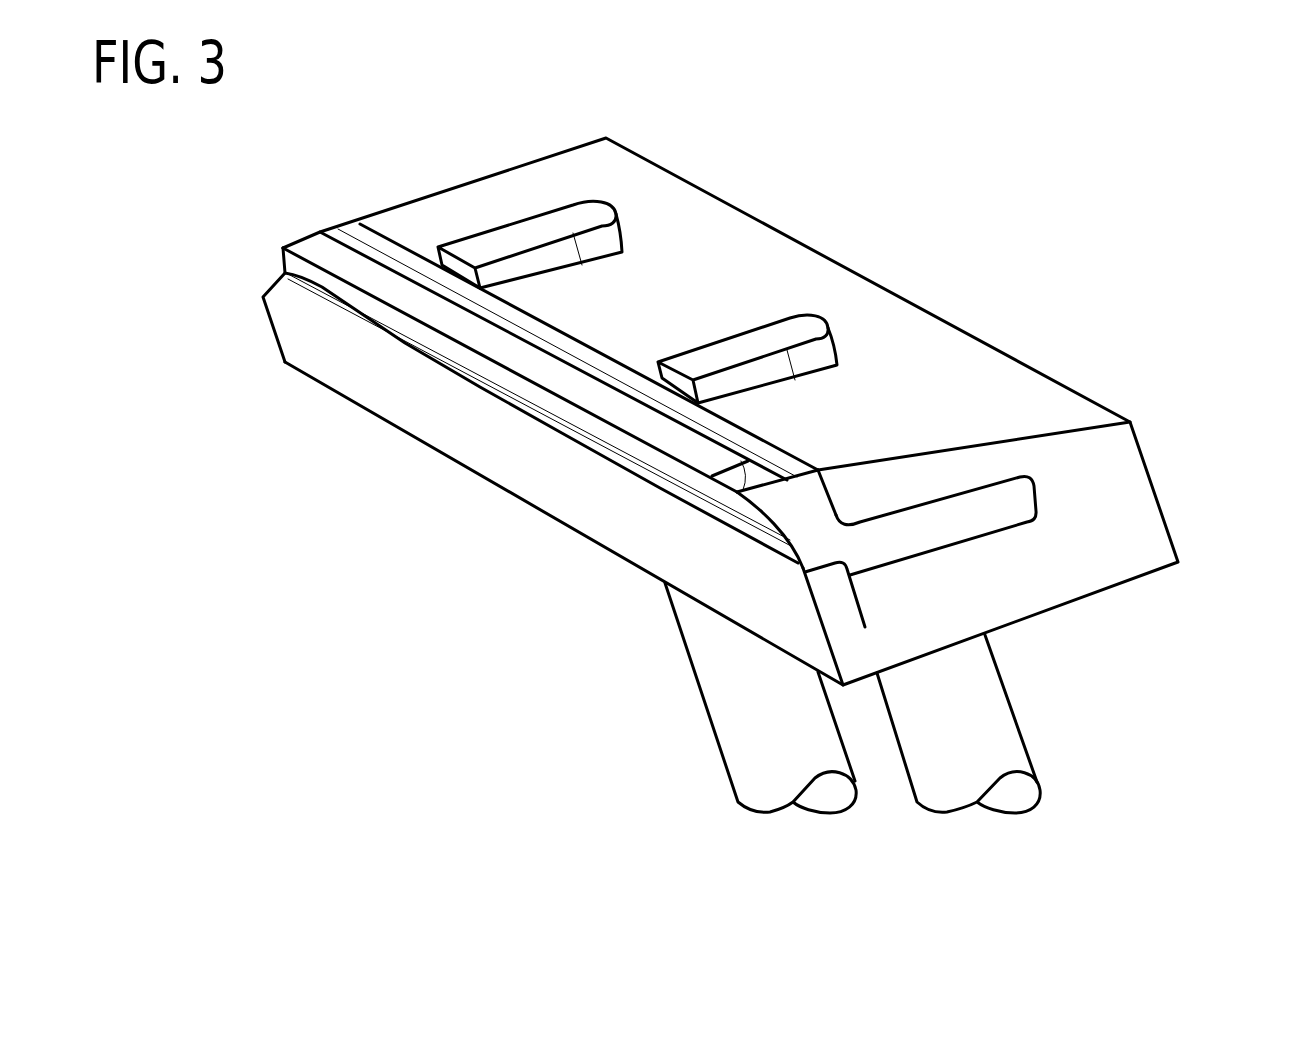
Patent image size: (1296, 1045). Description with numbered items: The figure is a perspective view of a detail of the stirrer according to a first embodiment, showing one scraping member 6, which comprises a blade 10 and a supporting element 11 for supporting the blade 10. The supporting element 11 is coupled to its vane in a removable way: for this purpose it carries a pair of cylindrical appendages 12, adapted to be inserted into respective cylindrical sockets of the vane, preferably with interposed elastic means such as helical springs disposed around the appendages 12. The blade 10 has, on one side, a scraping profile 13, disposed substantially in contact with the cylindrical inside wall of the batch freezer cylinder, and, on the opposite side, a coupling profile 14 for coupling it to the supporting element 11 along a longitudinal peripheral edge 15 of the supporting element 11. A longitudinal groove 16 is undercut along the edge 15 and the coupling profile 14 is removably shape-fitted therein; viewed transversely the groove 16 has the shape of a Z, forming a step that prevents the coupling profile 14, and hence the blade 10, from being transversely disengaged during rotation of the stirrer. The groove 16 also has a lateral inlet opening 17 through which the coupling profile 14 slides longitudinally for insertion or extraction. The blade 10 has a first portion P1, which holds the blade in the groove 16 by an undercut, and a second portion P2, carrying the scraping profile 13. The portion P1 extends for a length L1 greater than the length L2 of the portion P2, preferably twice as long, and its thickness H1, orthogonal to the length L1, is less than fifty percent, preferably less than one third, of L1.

The scraping member 6 is at (1160, 368).
The blade 10 is at (292, 232).
The supporting element 11 is at (1128, 514).
The cylindrical appendages 12 is at (788, 715).
The scraping profile 13 is at (330, 253).
The coupling profile 14 is at (812, 518).
The longitudinal peripheral edge 15 is at (692, 522).
The longitudinal groove 16 is at (852, 520).
The inlet opening 17 is at (1027, 587).
The first portion P1 is at (968, 490).
The second portion P2 is at (610, 350).
The length of the first portion L1 is at (1034, 520).
The length of the second portion L2 is at (898, 612).
The thickness of the first portion H1 is at (1031, 428).